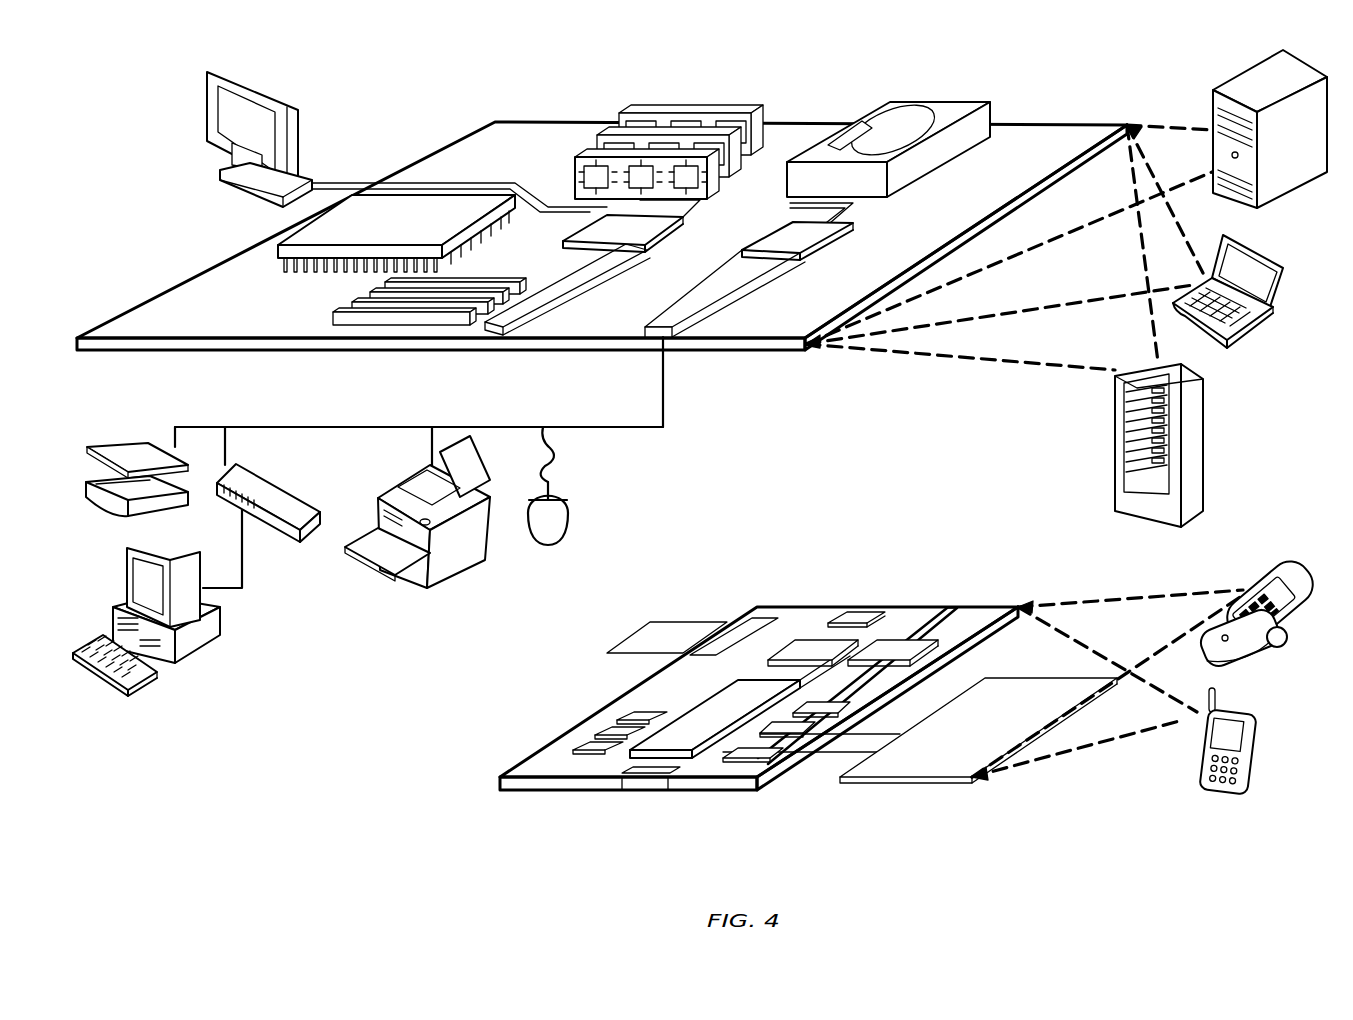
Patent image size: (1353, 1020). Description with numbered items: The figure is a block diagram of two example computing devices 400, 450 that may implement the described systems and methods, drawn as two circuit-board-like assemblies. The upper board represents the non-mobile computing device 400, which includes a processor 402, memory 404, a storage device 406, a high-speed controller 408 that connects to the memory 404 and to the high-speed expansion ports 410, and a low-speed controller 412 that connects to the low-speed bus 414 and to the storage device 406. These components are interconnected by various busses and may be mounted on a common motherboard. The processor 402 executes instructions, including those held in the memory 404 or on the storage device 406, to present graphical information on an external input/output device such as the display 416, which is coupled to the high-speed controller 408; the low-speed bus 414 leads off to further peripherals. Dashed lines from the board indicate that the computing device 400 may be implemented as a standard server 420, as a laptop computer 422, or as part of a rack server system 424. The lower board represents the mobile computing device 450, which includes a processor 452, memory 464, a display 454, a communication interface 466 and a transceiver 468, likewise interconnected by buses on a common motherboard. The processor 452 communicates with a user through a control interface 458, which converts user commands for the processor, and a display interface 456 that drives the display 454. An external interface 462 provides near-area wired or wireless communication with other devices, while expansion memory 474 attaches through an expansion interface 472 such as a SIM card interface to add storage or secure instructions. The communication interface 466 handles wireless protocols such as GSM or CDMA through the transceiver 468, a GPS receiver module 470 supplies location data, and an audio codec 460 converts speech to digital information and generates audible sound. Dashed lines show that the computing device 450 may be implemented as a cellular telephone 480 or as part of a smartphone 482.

The computing device 400 is at (415, 92).
The processor 402 is at (278, 248).
The memory 404 is at (628, 120).
The storage device 406 is at (880, 104).
The high-speed controller 408 is at (598, 232).
The high-speed expansion ports 410 is at (352, 307).
The low-speed controller 412 is at (785, 238).
The low-speed bus 414 is at (663, 340).
The display 416 is at (210, 64).
The standard server 420 is at (1213, 110).
The laptop computer 422 is at (1282, 262).
The rack server system 424 is at (1116, 472).
The computing device 450 is at (470, 797).
The processor 452 is at (687, 742).
The display 454 is at (940, 778).
The display interface 456 is at (748, 755).
The control interface 458 is at (792, 730).
The audio codec 460 is at (820, 708).
The external interface 462 is at (650, 787).
The memory 464 is at (600, 742).
The communication interface 466 is at (812, 645).
The transceiver 468 is at (893, 646).
The GPS receiver module 470 is at (858, 614).
The expansion interface 472 is at (740, 620).
The expansion memory 474 is at (660, 622).
The cellular telephone 480 is at (1248, 565).
The smartphone 482 is at (1198, 756).